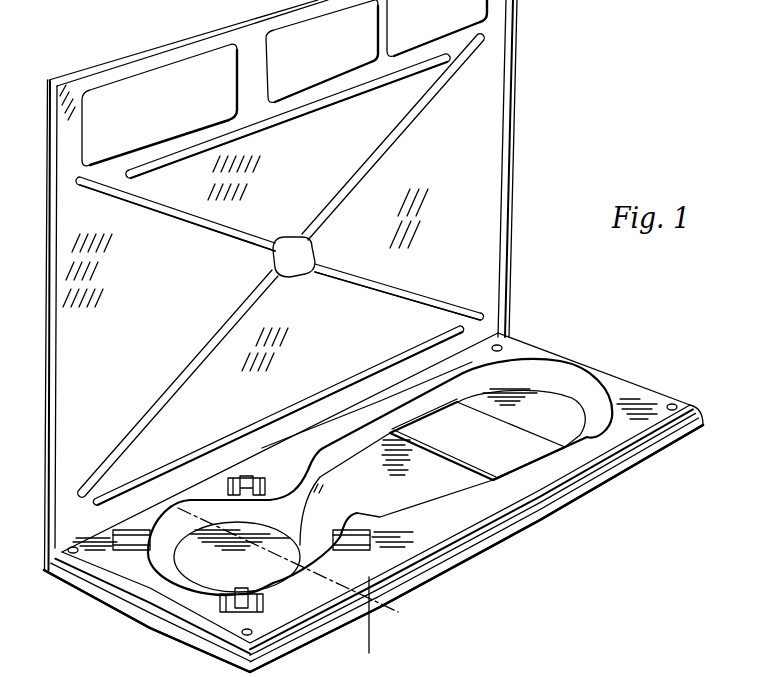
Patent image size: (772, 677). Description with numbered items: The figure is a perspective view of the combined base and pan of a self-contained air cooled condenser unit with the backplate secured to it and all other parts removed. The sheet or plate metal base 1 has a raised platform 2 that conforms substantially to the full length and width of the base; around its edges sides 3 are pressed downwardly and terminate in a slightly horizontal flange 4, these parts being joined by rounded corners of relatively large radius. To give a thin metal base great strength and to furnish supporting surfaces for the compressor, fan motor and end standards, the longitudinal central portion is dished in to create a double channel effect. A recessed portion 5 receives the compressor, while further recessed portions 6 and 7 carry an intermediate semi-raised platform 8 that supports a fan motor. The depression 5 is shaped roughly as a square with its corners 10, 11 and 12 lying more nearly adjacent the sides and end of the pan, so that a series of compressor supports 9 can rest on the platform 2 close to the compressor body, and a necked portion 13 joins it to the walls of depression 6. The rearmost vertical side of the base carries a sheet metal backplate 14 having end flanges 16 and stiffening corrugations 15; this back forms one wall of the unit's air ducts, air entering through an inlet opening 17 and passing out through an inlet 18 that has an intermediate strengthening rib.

The base 1 is at (675, 386).
The raised platform 2 is at (600, 447).
The sides 3 is at (547, 498).
The horizontal flange 4 is at (507, 535).
The recessed portion 5 is at (203, 568).
The recessed portion 6 is at (455, 522).
The recessed portion 7 is at (527, 393).
The semi-raised platform 8 is at (517, 440).
The compressor supports 9 is at (127, 533).
The corner of depression 10 is at (323, 576).
The corner of depression 11 is at (178, 500).
The corner of depression 12 is at (180, 500).
The necked portion 13 is at (290, 483).
The backplate 14 is at (528, 207).
The stiffening corrugations 15 is at (374, 88).
The end flanges 16 is at (254, 21).
The inlet opening 17 is at (161, 69).
The inlet 18 is at (340, 12).